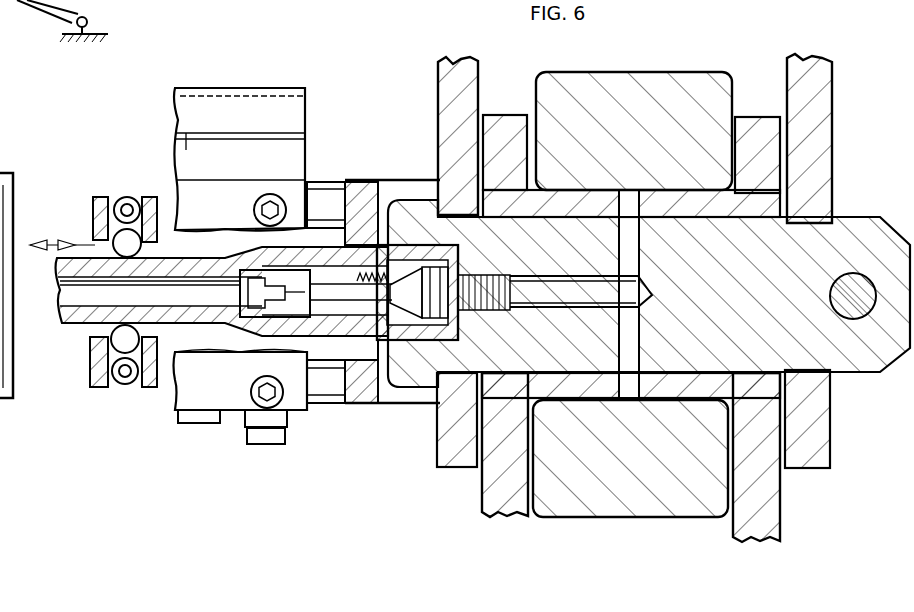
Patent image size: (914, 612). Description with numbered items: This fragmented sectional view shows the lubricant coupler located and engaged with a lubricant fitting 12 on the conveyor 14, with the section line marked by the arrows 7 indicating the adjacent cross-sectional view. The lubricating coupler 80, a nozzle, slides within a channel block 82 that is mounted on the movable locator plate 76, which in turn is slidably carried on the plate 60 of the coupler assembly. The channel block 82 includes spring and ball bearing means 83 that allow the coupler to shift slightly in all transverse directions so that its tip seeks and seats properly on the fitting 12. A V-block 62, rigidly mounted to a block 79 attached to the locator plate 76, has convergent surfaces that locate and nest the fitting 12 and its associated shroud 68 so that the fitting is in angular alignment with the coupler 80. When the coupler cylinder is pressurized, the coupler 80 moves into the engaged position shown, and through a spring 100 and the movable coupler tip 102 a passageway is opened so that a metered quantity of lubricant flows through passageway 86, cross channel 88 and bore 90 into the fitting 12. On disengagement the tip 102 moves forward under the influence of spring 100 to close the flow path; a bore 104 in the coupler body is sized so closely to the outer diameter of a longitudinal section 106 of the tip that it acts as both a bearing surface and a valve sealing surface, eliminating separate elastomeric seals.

The section line 7- 7 is at (423, 163).
The lubricant fitting 12 is at (417, 257).
The conveyor 14 is at (449, 64).
The plate 60 is at (235, 97).
The V-block 62 is at (346, 405).
The shroud 68 is at (396, 402).
The locator plate 76 is at (184, 136).
The block 79 is at (246, 180).
The lubricating coupler 80 is at (368, 268).
The channel block 82 is at (94, 218).
The spring and ball bearing means 83 is at (126, 197).
The passageway 86 is at (72, 296).
The cross channel 88 is at (240, 296).
The bore 90 is at (345, 305).
The spring 100 is at (326, 292).
The coupler tip 102 is at (462, 338).
The bore 104 is at (304, 338).
The longitudinal section 106 is at (250, 230).